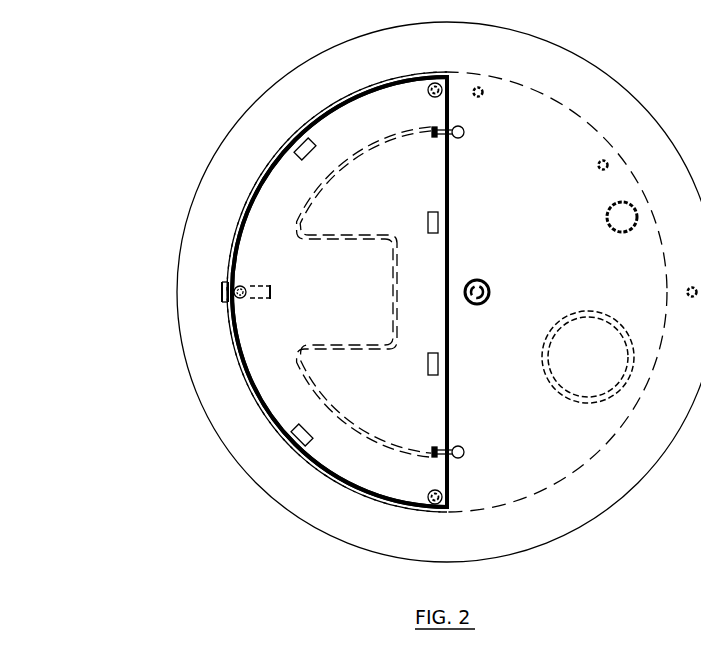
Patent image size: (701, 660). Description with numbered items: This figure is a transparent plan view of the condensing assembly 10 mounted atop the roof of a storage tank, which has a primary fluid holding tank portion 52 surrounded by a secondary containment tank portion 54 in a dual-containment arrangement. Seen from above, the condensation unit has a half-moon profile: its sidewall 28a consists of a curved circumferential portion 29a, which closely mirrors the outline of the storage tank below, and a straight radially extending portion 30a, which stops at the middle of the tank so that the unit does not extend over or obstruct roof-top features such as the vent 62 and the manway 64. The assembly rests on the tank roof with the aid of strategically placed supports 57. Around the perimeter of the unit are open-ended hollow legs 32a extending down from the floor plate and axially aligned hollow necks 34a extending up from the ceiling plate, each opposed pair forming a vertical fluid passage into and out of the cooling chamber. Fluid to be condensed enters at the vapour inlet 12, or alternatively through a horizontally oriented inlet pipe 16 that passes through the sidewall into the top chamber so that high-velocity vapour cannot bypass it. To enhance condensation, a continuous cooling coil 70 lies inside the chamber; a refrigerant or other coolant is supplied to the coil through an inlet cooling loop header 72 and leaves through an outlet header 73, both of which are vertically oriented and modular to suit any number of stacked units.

The condensing assembly 10 is at (433, 303).
The vapour inlet 12 is at (236, 292).
The horizontally oriented inlet pipe 16 is at (220, 292).
The sidewall 28a is at (275, 292).
The circumferential portion 29a is at (280, 292).
The radially extending portion 30a is at (449, 183).
The hollow leg 32a is at (345, 51).
The hollow neck 34a is at (345, 531).
The primary fluid holding tank portion 52 is at (447, 297).
The secondary containment tank portion 54 is at (439, 295).
The supports 57 is at (427, 363).
The vent 62 is at (490, 292).
The manway 64 is at (576, 368).
The cooling coil 70 is at (392, 292).
The inlet cooling loop header 72 is at (465, 132).
The outlet header 73 is at (465, 452).